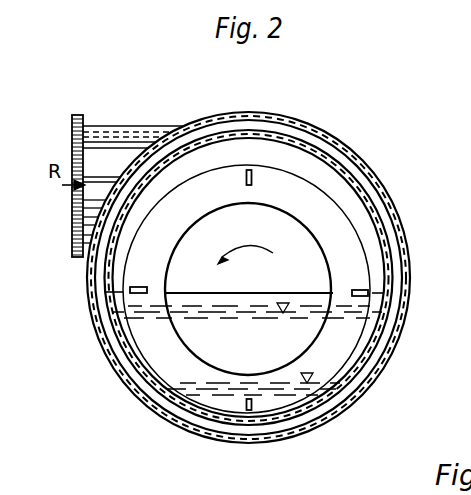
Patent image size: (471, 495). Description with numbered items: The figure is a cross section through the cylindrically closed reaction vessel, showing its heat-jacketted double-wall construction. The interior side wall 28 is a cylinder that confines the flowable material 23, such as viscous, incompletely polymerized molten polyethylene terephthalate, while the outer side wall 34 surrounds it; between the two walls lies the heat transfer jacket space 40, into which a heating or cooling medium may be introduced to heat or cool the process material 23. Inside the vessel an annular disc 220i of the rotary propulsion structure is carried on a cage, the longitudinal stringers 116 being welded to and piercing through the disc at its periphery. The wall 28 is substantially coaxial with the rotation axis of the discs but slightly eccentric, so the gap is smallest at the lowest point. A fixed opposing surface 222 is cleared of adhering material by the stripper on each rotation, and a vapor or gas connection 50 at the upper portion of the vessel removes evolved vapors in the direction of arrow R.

The vapor or gas connection 50 is at (128, 147).
The annular disc 220i is at (228, 182).
The longitudinal stringers 116 is at (257, 177).
The fixed opposing surface 222 is at (313, 293).
The interior side wall 28 is at (127, 358).
The heat transfer jacket space 40 is at (143, 388).
The outer side wall 34 is at (205, 437).
The flowable material 23 is at (303, 392).